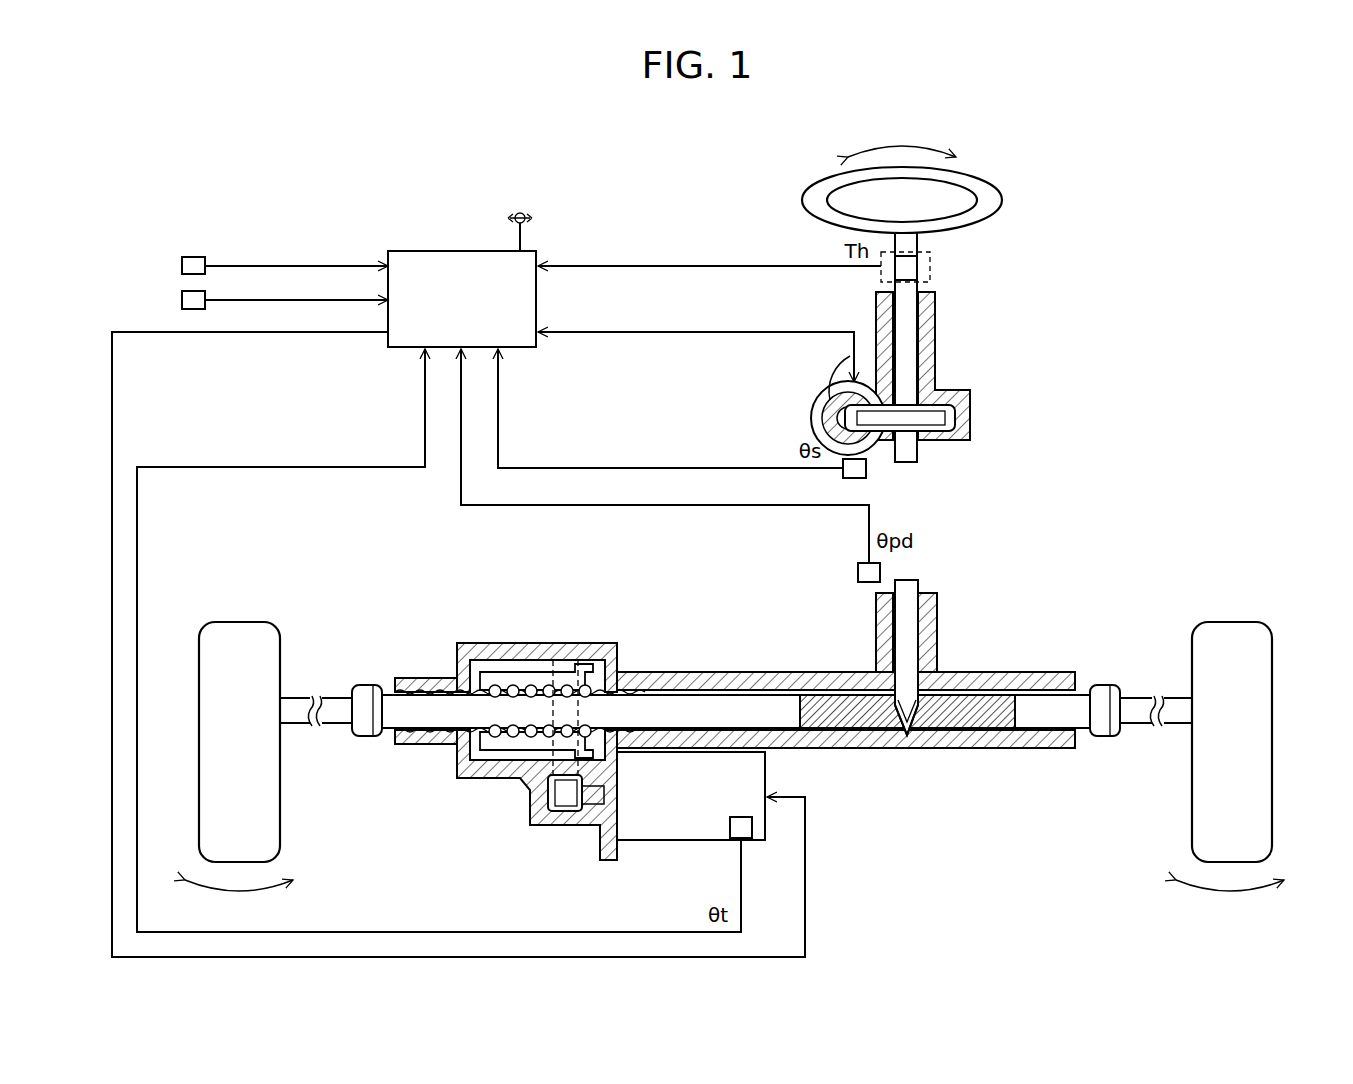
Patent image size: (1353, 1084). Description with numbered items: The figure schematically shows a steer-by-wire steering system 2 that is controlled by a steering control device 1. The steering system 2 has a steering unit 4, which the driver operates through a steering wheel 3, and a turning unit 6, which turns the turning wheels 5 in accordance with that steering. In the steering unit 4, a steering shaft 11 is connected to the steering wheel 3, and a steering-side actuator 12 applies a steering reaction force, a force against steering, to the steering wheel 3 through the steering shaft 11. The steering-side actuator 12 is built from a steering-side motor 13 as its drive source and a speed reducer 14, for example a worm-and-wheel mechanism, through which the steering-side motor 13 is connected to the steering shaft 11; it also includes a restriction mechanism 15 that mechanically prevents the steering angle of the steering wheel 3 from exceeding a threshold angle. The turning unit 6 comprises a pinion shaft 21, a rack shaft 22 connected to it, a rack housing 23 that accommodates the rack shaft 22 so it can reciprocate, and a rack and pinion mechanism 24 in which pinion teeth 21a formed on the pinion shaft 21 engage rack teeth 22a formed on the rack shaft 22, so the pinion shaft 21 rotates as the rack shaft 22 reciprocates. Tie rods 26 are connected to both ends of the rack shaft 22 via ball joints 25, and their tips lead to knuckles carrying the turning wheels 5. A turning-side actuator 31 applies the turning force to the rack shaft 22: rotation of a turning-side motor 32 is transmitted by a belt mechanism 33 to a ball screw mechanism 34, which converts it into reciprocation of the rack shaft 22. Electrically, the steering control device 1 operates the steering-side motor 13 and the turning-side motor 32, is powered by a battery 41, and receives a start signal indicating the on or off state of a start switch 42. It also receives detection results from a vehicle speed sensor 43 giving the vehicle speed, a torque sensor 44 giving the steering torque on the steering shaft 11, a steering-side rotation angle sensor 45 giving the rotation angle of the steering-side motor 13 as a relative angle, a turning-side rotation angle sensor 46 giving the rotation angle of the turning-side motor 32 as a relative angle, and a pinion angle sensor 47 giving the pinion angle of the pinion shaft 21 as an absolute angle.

The steering control device 1 is at (417, 250).
The steering system 2 is at (1062, 478).
The steering wheel 3 is at (1002, 196).
The steering unit 4 is at (994, 461).
The turning wheels 5 is at (241, 622).
The turning unit 6 is at (1000, 572).
The steering shaft 11 is at (940, 308).
The steering-side actuator 12 is at (794, 407).
The steering-side motor 13 is at (830, 380).
The speed reducer 14 is at (862, 442).
The restriction mechanism 15 is at (922, 462).
The pinion shaft 21 is at (920, 691).
The pinion teeth 21a is at (900, 743).
The rack shaft 22 is at (736, 711).
The rack teeth 22a is at (835, 744).
The rack housing 23 is at (577, 642).
The rack and pinion mechanism 24 is at (932, 752).
The ball joints 25 is at (362, 684).
The tie rods 26 is at (300, 728).
The turning-side actuator 31 is at (388, 848).
The turning-side motor 32 is at (768, 820).
The belt mechanism 33 is at (554, 816).
The ball screw mechanism 34 is at (486, 783).
The battery 41 is at (520, 210).
The start switch 42 is at (182, 304).
The vehicle speed sensor 43 is at (182, 270).
The torque sensor 44 is at (932, 262).
The steering-side rotation angle sensor 45 is at (843, 472).
The turning-side rotation angle sensor 46 is at (743, 816).
The pinion angle sensor 47 is at (856, 574).